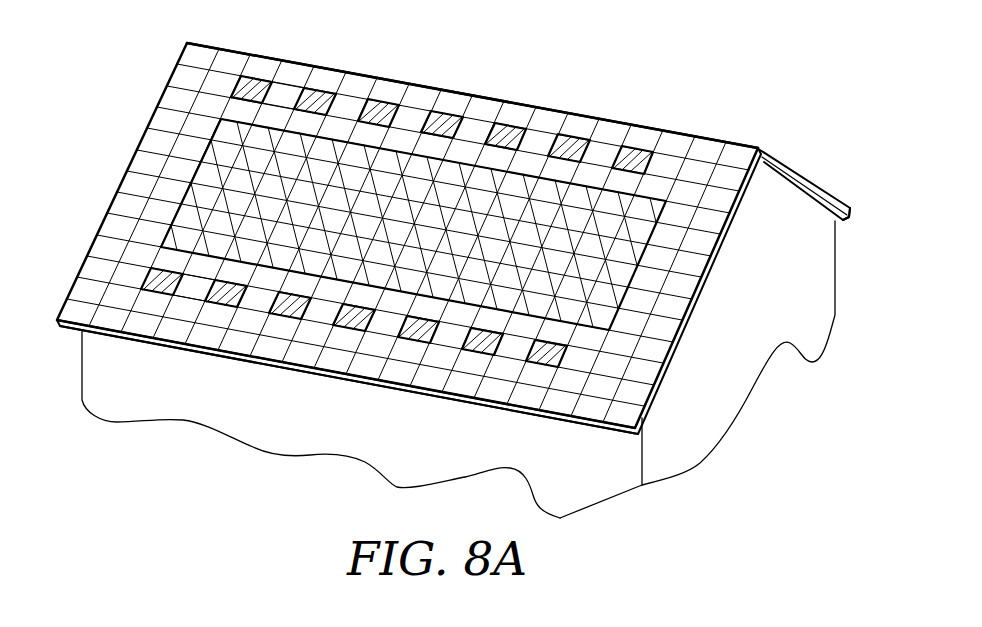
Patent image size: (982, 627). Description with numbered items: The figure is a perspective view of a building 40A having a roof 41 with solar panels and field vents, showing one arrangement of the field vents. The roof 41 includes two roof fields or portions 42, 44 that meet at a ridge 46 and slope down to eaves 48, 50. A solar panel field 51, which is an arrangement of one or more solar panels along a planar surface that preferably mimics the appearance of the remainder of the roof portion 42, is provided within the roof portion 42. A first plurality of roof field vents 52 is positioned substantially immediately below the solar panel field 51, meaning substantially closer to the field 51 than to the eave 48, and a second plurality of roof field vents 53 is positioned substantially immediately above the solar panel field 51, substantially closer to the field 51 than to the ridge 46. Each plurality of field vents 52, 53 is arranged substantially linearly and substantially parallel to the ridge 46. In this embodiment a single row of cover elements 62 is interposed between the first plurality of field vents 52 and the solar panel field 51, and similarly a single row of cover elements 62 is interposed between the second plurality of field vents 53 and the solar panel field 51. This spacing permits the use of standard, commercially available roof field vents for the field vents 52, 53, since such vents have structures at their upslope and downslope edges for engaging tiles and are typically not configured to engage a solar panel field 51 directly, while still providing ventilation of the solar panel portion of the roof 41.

The building 40A is at (129, 108).
The roof 41 is at (730, 106).
The roof portion 42 is at (602, 378).
The roof portion 44 is at (790, 167).
The ridge 46 is at (590, 116).
The eave 48 is at (448, 395).
The eave 50 is at (845, 221).
The solar panel field 51 is at (384, 216).
The first plurality of roof field vents 52 is at (345, 309).
The second plurality of roof field vents 53 is at (558, 132).
The cover elements 62 is at (240, 108).